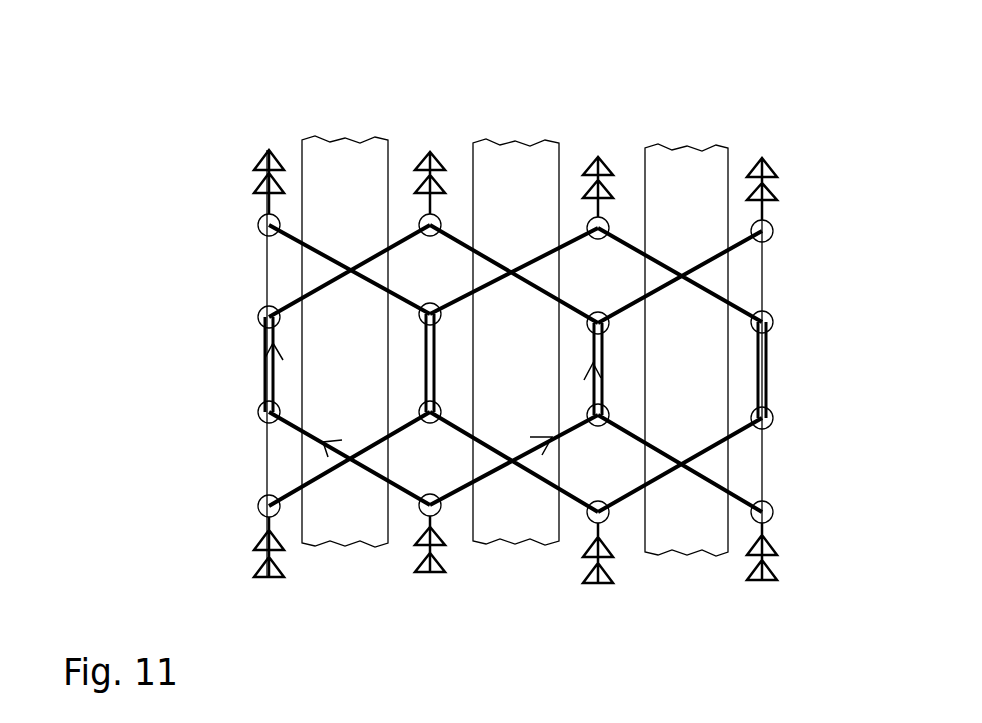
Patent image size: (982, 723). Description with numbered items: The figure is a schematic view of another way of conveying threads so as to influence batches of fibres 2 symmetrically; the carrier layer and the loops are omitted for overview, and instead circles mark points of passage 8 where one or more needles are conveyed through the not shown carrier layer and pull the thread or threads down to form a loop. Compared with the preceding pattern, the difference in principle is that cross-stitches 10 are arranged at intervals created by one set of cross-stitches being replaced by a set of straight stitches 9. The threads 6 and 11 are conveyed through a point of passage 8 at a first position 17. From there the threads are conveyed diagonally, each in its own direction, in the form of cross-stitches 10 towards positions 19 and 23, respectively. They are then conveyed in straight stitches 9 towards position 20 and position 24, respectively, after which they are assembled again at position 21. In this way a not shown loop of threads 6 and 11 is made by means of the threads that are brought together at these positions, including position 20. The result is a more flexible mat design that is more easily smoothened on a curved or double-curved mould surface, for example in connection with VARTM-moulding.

The batch of fibres 2 is at (338, 138).
The thread 6 is at (427, 523).
The point of passage 8 is at (772, 225).
The straight stitch 9 is at (267, 272).
The cross-stitch 10 is at (480, 477).
The thread 11 is at (438, 527).
The first position 17 is at (421, 505).
The position 19 is at (257, 413).
The position 20 is at (257, 318).
The position 21 is at (418, 226).
The position 23 is at (610, 410).
The position 24 is at (610, 328).